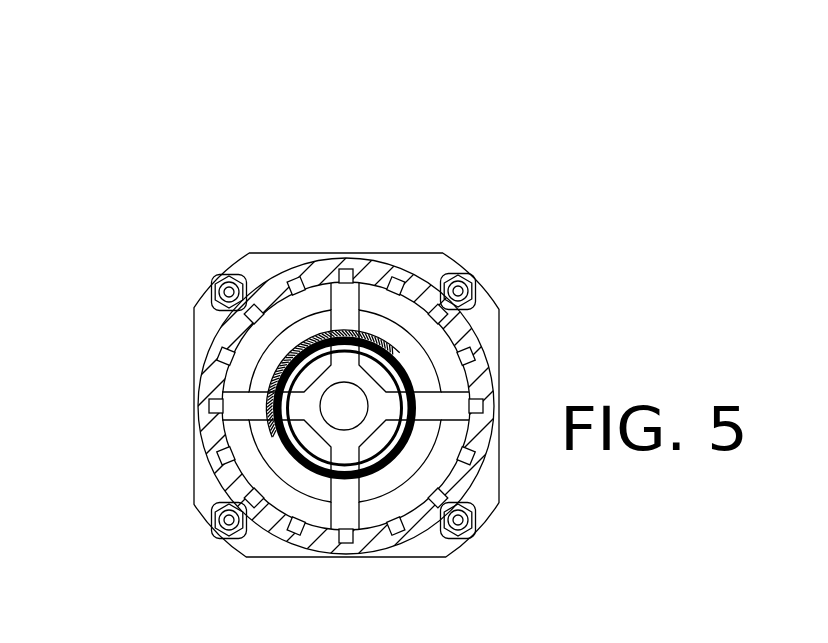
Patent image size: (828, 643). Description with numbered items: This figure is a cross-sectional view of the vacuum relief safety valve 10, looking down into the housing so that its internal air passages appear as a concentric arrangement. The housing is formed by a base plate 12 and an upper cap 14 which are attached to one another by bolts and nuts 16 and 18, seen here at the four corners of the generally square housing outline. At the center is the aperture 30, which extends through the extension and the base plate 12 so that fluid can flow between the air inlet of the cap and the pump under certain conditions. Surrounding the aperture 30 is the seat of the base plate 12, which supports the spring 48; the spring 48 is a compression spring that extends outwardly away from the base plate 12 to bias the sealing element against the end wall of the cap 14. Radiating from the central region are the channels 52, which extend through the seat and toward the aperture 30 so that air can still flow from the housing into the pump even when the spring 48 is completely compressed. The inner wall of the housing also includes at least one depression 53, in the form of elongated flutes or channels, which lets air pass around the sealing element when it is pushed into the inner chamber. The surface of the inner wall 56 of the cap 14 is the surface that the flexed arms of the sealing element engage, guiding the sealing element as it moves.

The vacuum relief safety valve 10 is at (558, 278).
The base plate 12 is at (418, 253).
The upper cap 14 is at (377, 275).
The bolts 16 is at (409, 269).
The nuts 18 is at (464, 276).
The aperture 30 is at (352, 403).
The spring 48 is at (293, 366).
The channels 52 is at (252, 408).
The depression 53 is at (311, 352).
The inner wall 56 is at (223, 433).